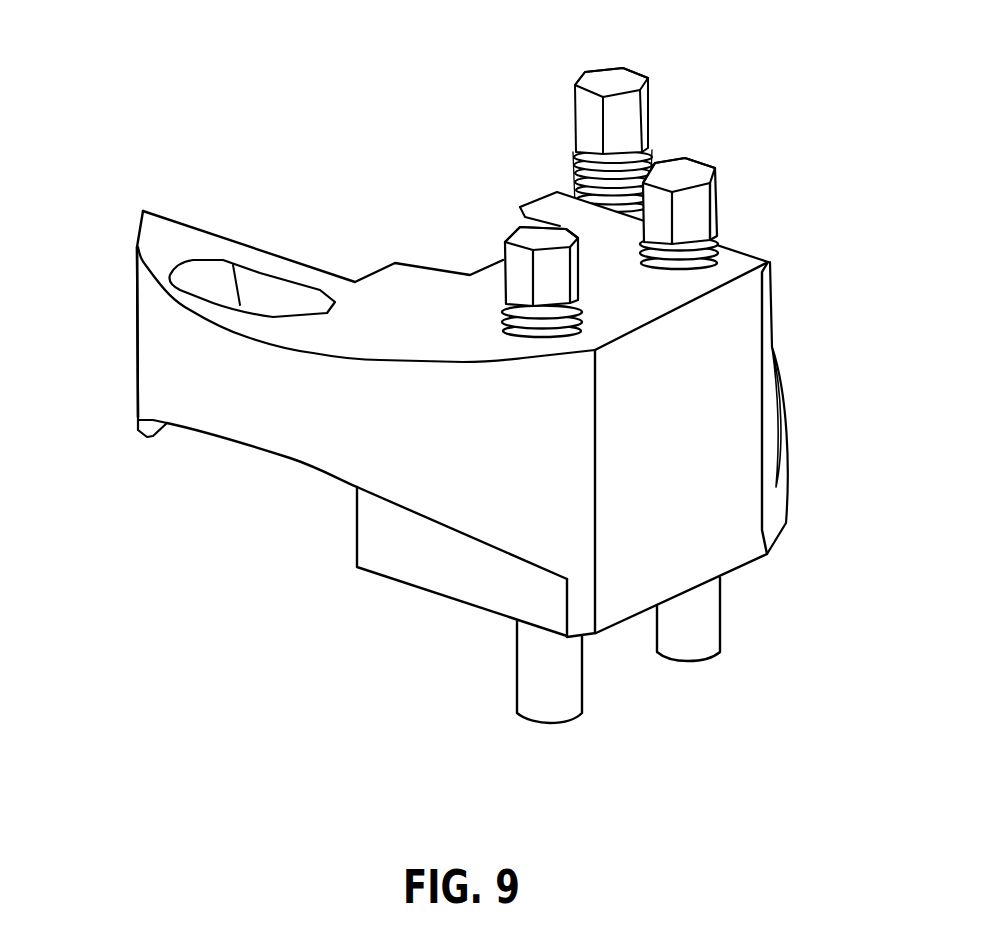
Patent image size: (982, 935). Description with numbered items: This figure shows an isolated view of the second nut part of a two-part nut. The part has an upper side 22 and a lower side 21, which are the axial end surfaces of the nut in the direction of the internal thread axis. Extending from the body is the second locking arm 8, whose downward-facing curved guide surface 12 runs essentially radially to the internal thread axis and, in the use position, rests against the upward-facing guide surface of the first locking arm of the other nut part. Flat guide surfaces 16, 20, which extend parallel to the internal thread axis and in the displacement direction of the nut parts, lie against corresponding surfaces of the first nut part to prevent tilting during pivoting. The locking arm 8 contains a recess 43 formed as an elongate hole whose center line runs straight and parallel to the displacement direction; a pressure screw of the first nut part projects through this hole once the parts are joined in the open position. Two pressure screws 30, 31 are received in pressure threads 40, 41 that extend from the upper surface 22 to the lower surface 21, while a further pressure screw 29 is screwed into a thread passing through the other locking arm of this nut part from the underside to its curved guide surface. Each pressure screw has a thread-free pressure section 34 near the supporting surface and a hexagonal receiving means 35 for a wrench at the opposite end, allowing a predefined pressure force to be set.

The locking arm 8 is at (135, 310).
The guide surface 12 is at (200, 432).
The flat guide surface 16 is at (418, 548).
The flat guide surface 20 is at (205, 212).
The lower side 21 is at (470, 640).
The upper side 22 is at (403, 300).
The pressure screw 29 is at (598, 83).
The pressure screw 30 is at (670, 177).
The pressure screw 31 is at (530, 237).
The pressure section 34 is at (558, 667).
The receiving means 35 is at (690, 215).
The pressure thread 40 is at (738, 246).
The pressure thread 41 is at (596, 304).
The recess 43 is at (250, 283).